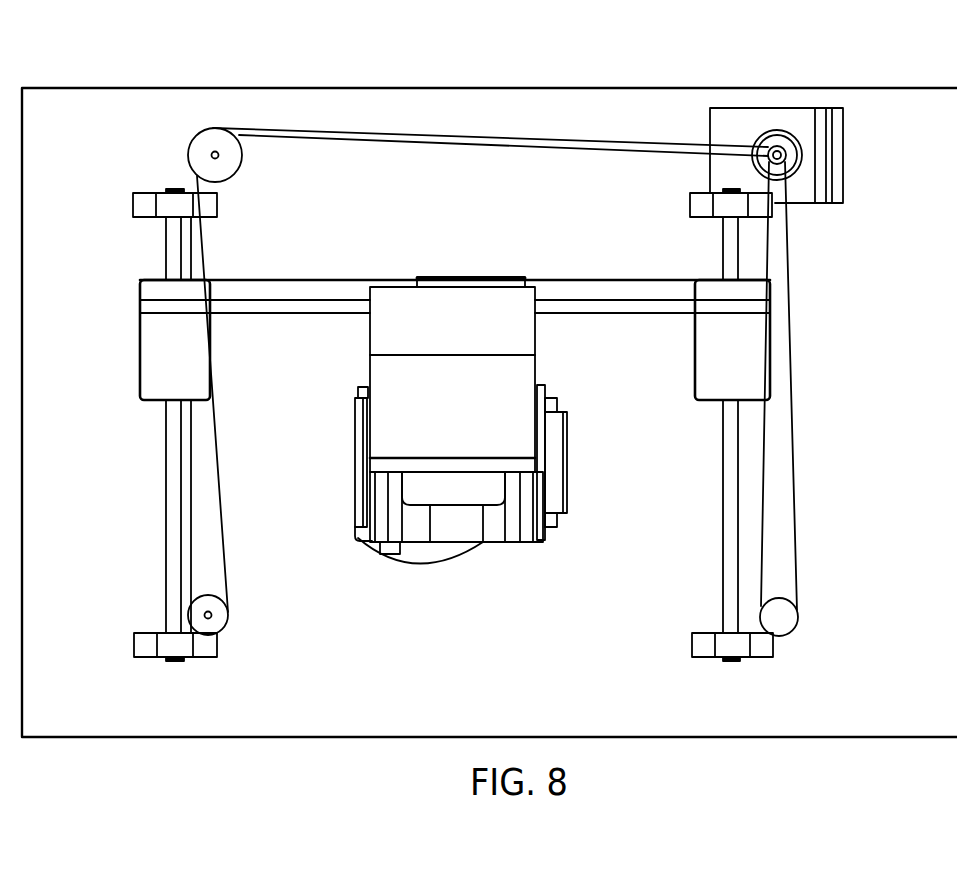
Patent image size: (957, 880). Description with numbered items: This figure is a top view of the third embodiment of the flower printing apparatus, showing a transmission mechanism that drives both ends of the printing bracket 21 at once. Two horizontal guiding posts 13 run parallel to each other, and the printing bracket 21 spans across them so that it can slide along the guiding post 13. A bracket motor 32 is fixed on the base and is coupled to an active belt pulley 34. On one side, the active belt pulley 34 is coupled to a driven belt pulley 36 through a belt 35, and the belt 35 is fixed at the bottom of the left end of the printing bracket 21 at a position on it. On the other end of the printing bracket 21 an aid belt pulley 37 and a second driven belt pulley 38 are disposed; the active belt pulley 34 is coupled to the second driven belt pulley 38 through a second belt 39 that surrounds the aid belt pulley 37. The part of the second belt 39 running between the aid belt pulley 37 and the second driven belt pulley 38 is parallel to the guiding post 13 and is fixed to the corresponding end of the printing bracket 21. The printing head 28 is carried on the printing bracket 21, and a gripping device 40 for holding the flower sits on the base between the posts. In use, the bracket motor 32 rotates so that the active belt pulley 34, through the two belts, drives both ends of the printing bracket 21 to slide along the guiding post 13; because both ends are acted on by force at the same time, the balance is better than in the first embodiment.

The guiding post 13 is at (177, 462).
The printing bracket 21 is at (233, 282).
The printing head 28 is at (530, 347).
The bracket motor 32 is at (807, 142).
The active belt pulley 34 is at (760, 132).
The belt 35 is at (788, 470).
The driven belt pulley 36 is at (781, 617).
The aid belt pulley 37 is at (228, 160).
The second driven belt pulley 38 is at (218, 613).
The second belt 39 is at (417, 138).
The gripping device 40 is at (455, 548).